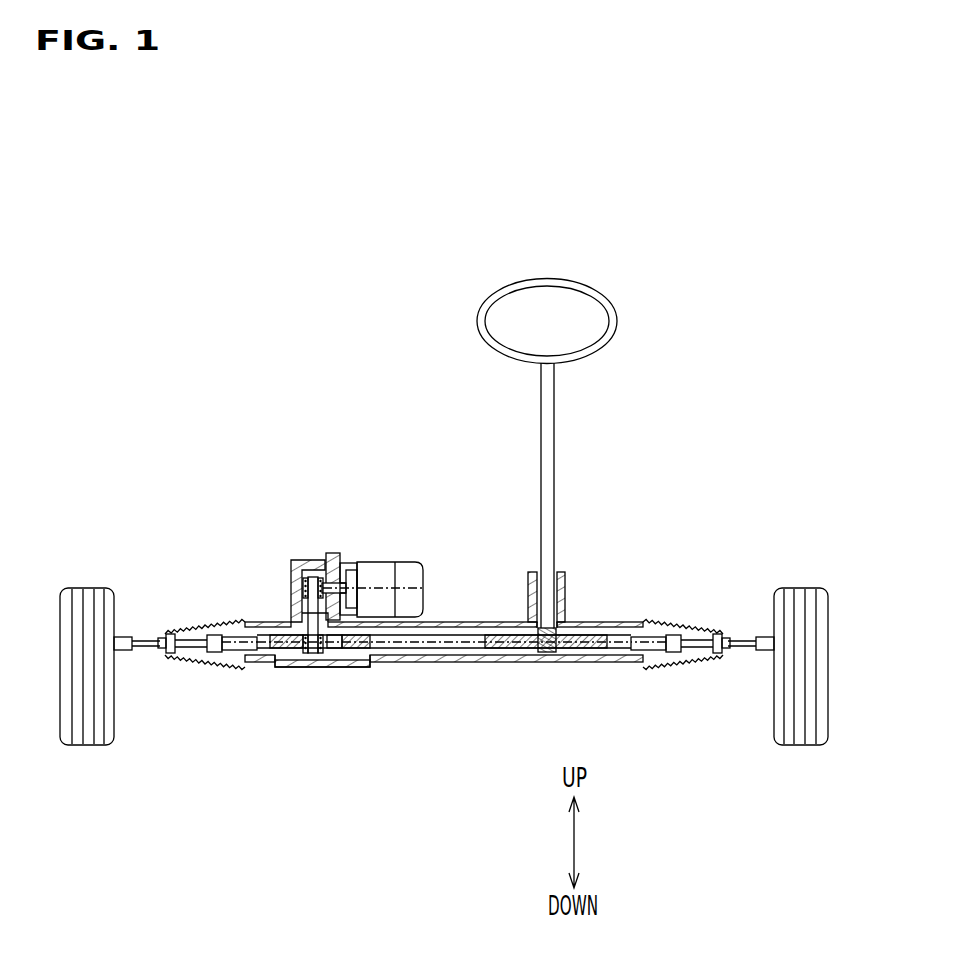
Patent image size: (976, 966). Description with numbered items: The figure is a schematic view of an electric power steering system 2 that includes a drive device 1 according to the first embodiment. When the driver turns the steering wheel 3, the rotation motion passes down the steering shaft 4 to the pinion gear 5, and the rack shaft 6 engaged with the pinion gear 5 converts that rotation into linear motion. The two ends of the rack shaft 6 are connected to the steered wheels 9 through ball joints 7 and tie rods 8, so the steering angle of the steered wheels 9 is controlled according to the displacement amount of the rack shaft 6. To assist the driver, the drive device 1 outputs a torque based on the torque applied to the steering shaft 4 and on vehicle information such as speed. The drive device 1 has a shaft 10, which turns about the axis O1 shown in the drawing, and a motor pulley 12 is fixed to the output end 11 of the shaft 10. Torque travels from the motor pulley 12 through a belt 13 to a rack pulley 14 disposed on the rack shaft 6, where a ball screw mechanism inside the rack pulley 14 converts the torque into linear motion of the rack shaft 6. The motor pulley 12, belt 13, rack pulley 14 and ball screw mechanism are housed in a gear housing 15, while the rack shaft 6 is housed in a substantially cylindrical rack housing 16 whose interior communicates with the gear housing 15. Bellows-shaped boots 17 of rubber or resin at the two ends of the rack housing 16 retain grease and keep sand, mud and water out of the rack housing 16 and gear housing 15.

The drive device 1 is at (421, 549).
The steering system 2 is at (254, 362).
The steering wheel 3 is at (617, 318).
The steering shaft 4 is at (555, 465).
The pinion gear 5 is at (545, 655).
The rack shaft 6 is at (452, 650).
The ball joint 7 is at (217, 660).
The tie rod 8 is at (172, 653).
The steered wheel 9 is at (88, 598).
The shaft 10 is at (350, 563).
The output end 11 is at (320, 556).
The motor pulley 12 is at (302, 585).
The belt 13 is at (312, 610).
The rack pulley 14 is at (337, 660).
The gear housing 15 is at (297, 560).
The rack housing 16 is at (498, 623).
The boot 17 is at (190, 627).
The motor axis O1 is at (372, 567).